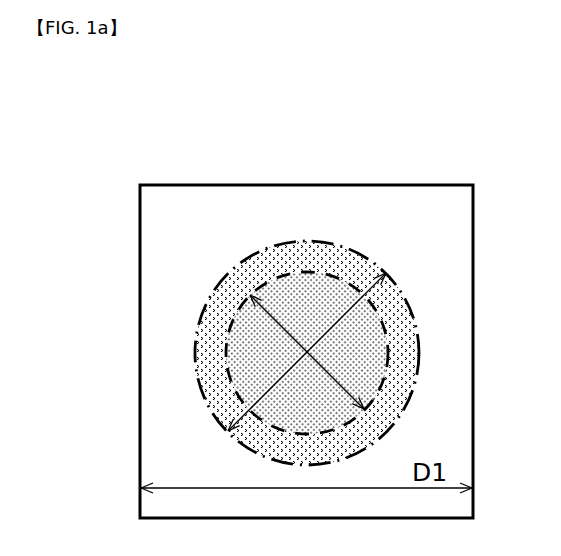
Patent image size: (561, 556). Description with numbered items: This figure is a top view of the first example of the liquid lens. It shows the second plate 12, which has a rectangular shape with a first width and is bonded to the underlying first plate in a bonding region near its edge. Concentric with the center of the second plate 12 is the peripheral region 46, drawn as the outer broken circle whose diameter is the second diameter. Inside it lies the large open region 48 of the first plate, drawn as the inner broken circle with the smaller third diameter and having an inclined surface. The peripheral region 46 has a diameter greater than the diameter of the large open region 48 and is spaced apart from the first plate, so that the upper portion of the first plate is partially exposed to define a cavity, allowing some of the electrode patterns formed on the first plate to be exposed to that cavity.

The second plate 12 is at (308, 185).
The peripheral region 46 is at (388, 272).
The large open region 48 is at (248, 294).